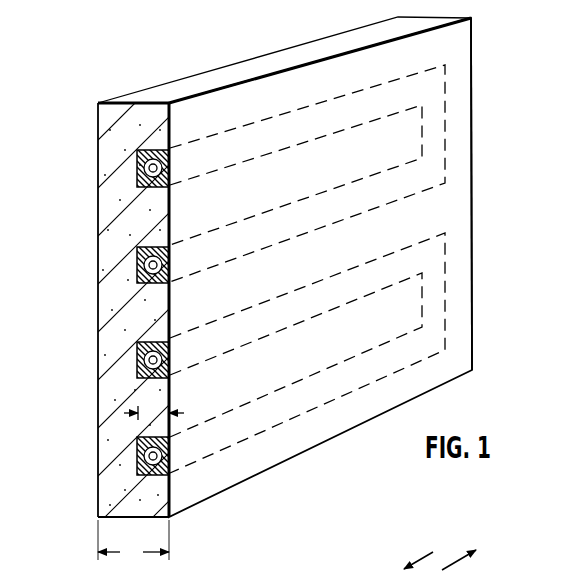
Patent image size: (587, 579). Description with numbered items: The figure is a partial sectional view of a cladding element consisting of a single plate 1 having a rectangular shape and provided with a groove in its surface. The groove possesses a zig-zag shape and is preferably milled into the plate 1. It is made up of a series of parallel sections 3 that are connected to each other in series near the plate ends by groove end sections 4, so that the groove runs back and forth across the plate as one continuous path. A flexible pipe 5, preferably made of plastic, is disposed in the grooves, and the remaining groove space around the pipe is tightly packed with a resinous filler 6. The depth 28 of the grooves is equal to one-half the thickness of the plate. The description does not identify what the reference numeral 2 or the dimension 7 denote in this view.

The plate 1 is at (478, 234).
The front cover plate 2 is at (313, 435).
The parallel sections 3 is at (138, 453).
The groove end sections 4 is at (435, 132).
The flexible pipe 5 is at (137, 172).
The resinous filler 6 is at (137, 153).
The panel thickness 7 is at (133, 546).
The depth of grooves 28 is at (164, 410).